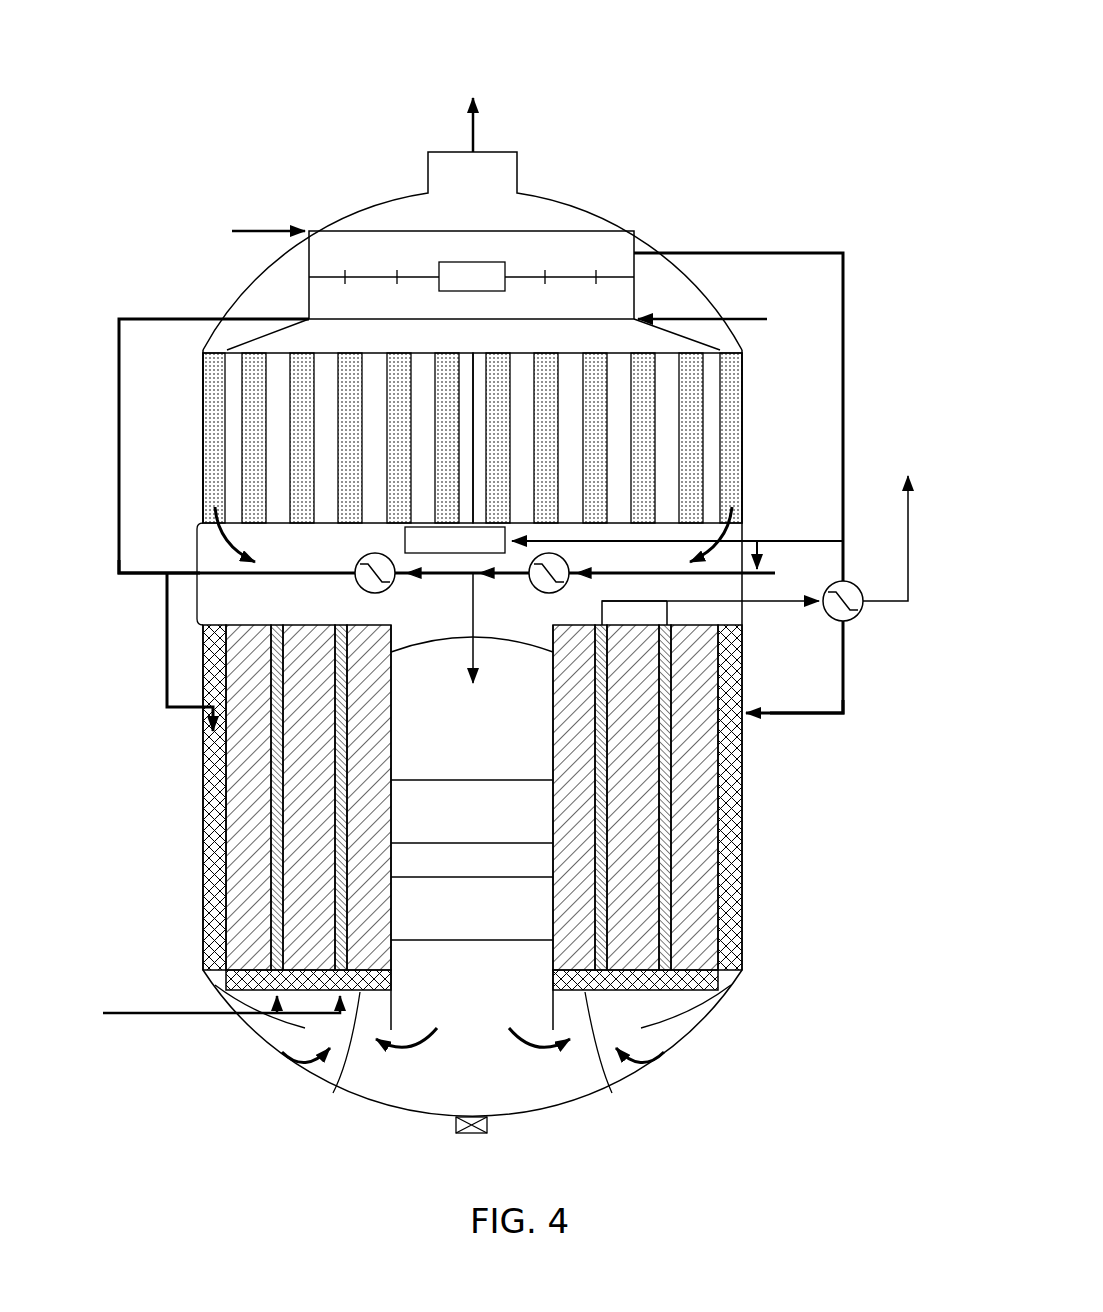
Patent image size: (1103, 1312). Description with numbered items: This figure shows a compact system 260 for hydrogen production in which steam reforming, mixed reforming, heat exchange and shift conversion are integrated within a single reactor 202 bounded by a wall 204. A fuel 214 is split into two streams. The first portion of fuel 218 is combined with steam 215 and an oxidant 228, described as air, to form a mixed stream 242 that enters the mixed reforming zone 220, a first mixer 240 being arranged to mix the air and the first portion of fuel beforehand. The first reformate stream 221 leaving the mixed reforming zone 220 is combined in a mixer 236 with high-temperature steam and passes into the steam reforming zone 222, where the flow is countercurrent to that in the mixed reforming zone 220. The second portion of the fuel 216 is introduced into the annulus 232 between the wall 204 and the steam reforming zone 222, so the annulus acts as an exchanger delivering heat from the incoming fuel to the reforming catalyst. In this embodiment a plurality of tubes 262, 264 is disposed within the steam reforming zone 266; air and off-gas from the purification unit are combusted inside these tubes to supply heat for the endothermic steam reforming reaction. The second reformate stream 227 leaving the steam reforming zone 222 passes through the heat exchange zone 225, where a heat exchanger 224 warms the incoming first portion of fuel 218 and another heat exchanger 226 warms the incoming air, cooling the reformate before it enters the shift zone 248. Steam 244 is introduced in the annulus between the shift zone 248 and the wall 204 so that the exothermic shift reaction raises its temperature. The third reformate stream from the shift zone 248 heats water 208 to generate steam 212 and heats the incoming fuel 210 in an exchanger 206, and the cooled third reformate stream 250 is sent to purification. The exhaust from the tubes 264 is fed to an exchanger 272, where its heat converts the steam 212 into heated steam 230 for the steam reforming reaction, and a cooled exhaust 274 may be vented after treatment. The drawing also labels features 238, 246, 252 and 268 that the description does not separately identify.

The compact system for hydrogen production 260 is at (697, 57).
The single reactor 202 is at (563, 212).
The wall 204 is at (355, 210).
The exchanger 206 is at (478, 262).
The water 208 is at (264, 230).
The incoming fuel 210 is at (748, 319).
The steam 212 is at (758, 253).
The fuel 214 is at (119, 405).
The steam 215 is at (762, 550).
The second portion of the fuel 216 is at (167, 668).
The first portion of fuel 218 is at (177, 568).
The mixed reforming zone 220 is at (472, 940).
The first reformate stream 221 is at (540, 1050).
The steam reforming zone 222 is at (742, 907).
The heat exchanger 224 is at (356, 562).
The heat exchange zone 225 is at (192, 595).
The heat exchanger 226 is at (570, 560).
The second reformate stream 227 is at (790, 601).
The oxidant 228 is at (772, 575).
The heated steam 230 is at (780, 713).
The annulus 232 is at (745, 835).
The mixer 236 is at (333, 1093).
The lower flow path 238 is at (612, 1093).
The first mixer 240 is at (472, 780).
The mixed stream 242 is at (475, 597).
The steam 244 is at (733, 528).
The tube bundle 246 is at (250, 447).
The shift zone 248 is at (703, 467).
The cooled third reformate stream 250 is at (474, 128).
The collector box 252 is at (405, 540).
The tubes 262 is at (160, 1013).
The plurality of tubes 264 is at (340, 903).
The steam reforming zone 266 is at (215, 820).
The inner dome 268 is at (392, 700).
The exchanger 272 is at (855, 612).
The cooled exhaust 274 is at (910, 540).